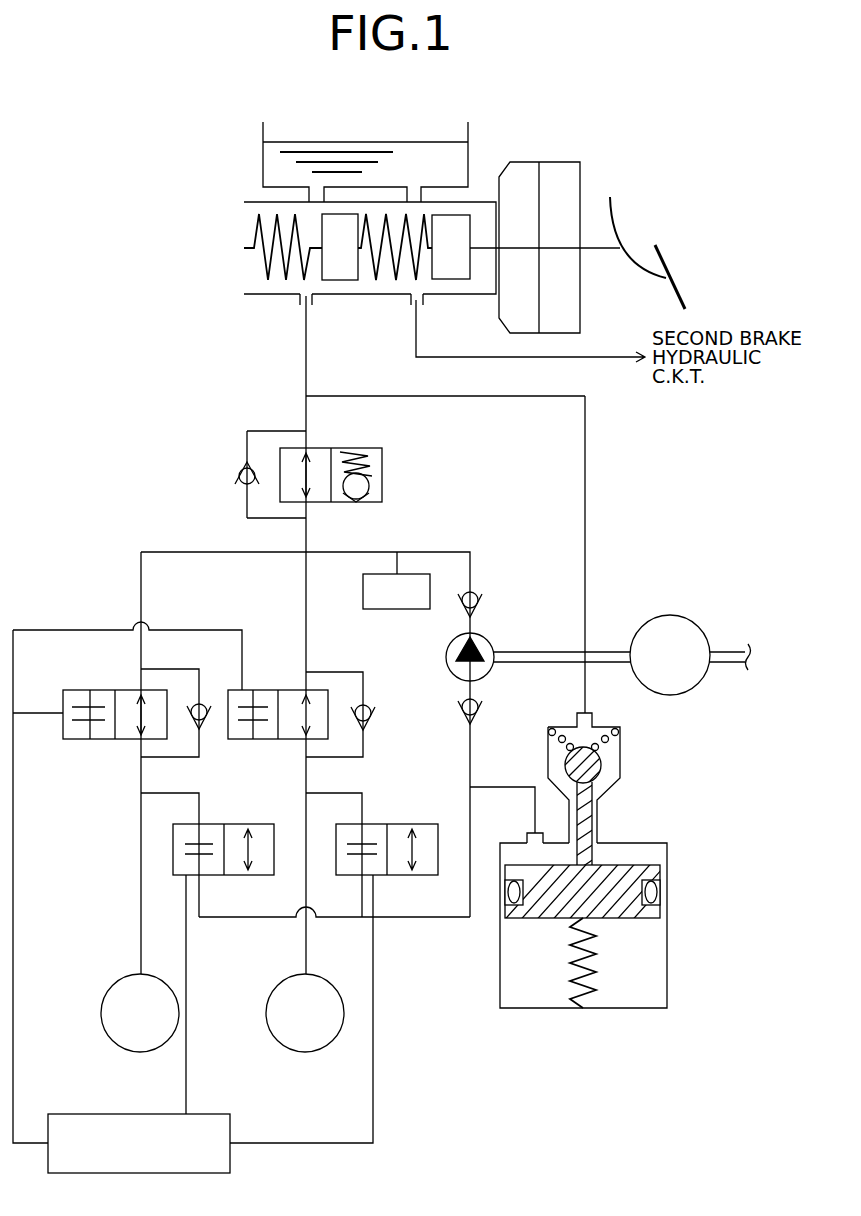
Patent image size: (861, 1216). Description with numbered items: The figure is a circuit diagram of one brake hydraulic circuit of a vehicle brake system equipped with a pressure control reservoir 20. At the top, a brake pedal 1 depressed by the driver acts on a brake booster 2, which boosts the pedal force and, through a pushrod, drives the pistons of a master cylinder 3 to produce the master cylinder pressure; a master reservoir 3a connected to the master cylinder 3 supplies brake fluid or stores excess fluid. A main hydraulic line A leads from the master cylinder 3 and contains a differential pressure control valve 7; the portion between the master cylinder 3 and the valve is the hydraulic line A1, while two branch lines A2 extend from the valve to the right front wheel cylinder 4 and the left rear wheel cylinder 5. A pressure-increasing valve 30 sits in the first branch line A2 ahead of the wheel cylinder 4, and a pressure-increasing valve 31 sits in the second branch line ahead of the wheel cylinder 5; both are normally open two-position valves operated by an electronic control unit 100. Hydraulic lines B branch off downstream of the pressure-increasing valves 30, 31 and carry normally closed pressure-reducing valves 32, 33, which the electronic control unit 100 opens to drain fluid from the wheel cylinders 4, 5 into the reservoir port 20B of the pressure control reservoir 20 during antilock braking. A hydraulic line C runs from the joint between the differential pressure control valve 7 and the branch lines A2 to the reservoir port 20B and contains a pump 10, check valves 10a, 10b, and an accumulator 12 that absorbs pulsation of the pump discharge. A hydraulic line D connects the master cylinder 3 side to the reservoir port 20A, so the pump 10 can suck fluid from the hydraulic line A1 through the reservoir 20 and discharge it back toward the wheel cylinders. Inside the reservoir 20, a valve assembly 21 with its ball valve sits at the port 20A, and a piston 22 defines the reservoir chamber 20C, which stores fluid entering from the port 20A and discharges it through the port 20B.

The brake pedal 1 is at (621, 220).
The brake booster 2 is at (560, 162).
The master cylinder 3 is at (233, 267).
The master reservoir 3a is at (365, 142).
The right front wheel cylinder 4 is at (101, 1012).
The left rear wheel cylinder 5 is at (266, 1012).
The differential pressure control valve 7 is at (383, 475).
The pump 10 is at (492, 645).
The check valve 10a is at (482, 598).
The check valve 10b is at (482, 705).
The accumulator 12 is at (362, 585).
The pressure control reservoir 20 is at (615, 876).
The reservoir port 20A is at (593, 707).
The reservoir port 20B is at (525, 838).
The reservoir chamber 20C is at (642, 857).
The valve assembly 21 is at (612, 770).
The piston 22 is at (633, 931).
The pressure-increasing valve 30 is at (72, 690).
The pressure-increasing valve 31 is at (268, 690).
The pressure-reducing valve 32 is at (262, 824).
The pressure-reducing valve 33 is at (425, 824).
The electronic control unit 100 is at (230, 1160).
The main hydraulic line A is at (295, 342).
The hydraulic line A1 is at (305, 417).
The branch line A2 is at (141, 580).
The hydraulic line B is at (262, 917).
The hydraulic line C is at (437, 552).
The hydraulic line D is at (585, 568).